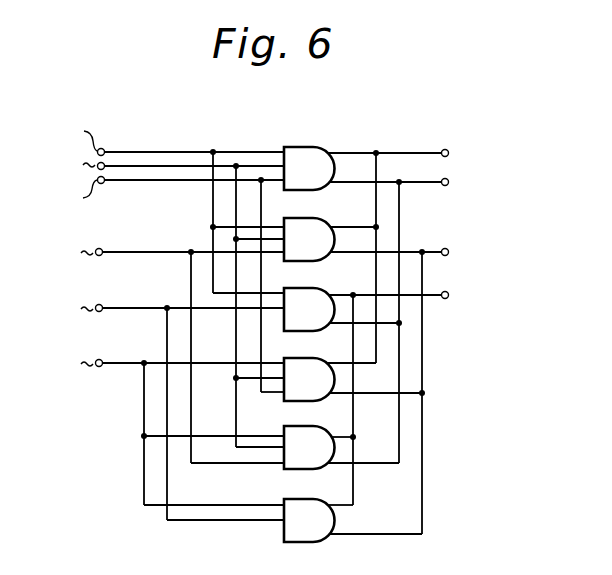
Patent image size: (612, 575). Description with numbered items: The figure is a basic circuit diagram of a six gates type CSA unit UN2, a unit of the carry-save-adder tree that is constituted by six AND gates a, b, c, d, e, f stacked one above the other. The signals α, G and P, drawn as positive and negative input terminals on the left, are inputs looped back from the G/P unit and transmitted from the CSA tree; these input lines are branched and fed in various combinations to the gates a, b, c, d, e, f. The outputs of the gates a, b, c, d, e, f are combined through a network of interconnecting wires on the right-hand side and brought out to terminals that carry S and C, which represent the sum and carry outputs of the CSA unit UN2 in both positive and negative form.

The six gates type CSA unit UN2 is at (416, 111).
The AND gate a is at (309, 168).
The AND gate b is at (309, 239).
The AND gate c is at (309, 309).
The AND gate d is at (309, 379).
The AND gate e is at (309, 447).
The AND gate f is at (309, 520).